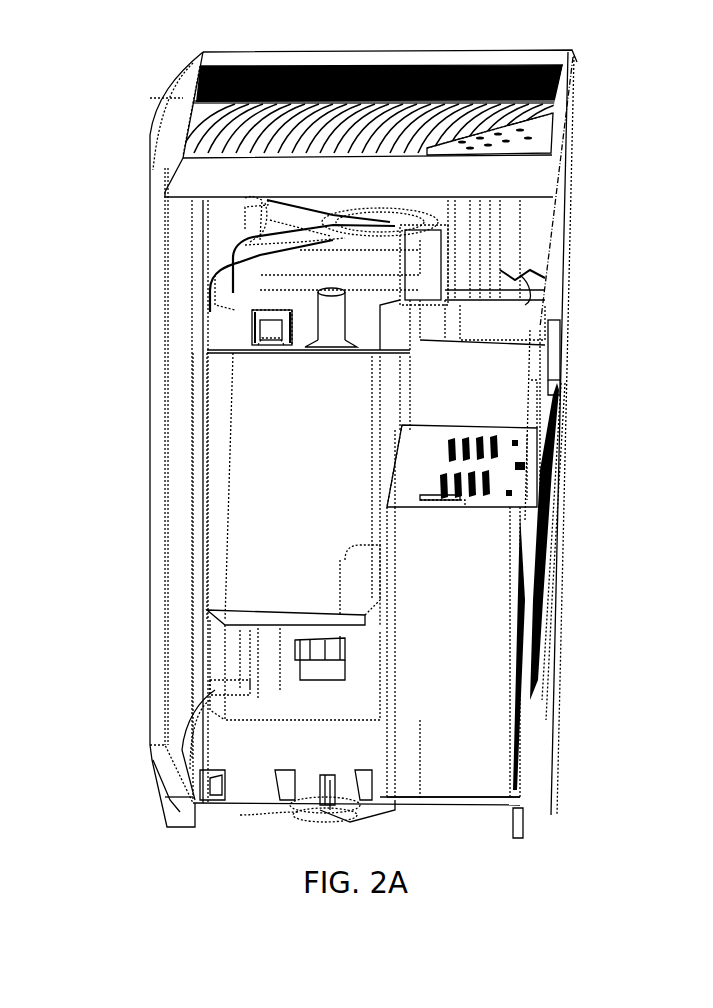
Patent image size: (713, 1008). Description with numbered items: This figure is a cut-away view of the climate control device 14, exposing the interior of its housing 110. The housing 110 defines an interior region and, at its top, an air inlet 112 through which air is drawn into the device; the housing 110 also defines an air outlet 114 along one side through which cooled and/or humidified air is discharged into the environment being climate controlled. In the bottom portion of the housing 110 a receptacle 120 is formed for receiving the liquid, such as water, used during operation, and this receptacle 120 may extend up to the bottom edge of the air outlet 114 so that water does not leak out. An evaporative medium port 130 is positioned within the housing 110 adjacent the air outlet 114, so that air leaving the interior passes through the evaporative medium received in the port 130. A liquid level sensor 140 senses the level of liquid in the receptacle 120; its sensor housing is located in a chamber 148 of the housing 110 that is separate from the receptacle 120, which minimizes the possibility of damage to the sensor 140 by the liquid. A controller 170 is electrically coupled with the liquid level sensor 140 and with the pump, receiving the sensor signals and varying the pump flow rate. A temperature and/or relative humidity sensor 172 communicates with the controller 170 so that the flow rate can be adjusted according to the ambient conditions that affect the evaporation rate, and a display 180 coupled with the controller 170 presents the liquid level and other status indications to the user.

The humidifier 14 is at (373, 444).
The housing 110 is at (150, 465).
The air inlet 112 is at (560, 91).
The air outlet 114 is at (560, 470).
The receptacle 120 is at (315, 735).
The evaporative medium port 130 is at (555, 520).
The liquid level sensor 140 is at (247, 328).
The chamber 148 is at (228, 220).
The controller 170 is at (520, 272).
The temperature and/or relative humidity sensor 172 is at (558, 327).
The display 180 is at (557, 125).